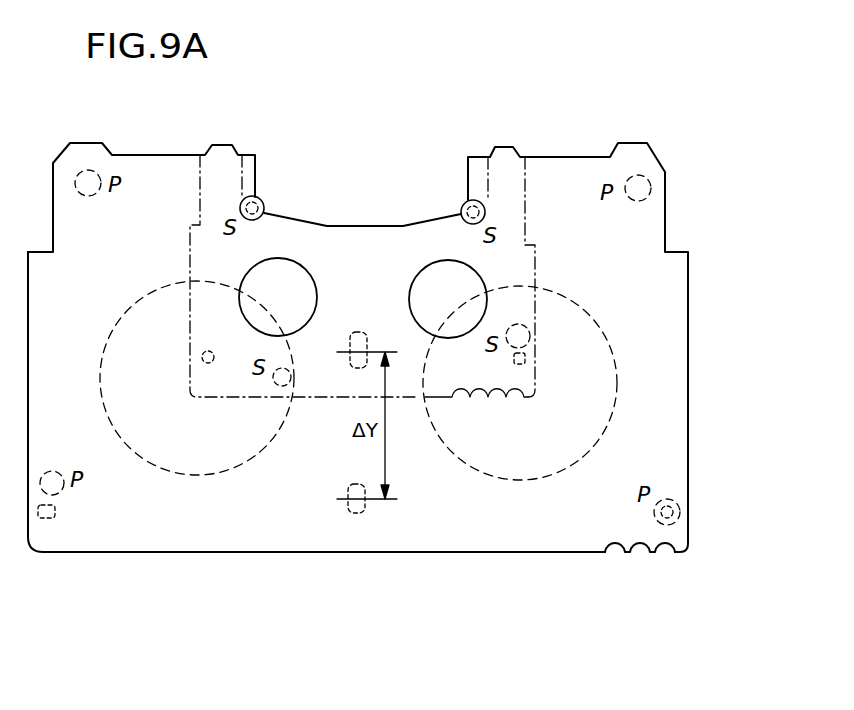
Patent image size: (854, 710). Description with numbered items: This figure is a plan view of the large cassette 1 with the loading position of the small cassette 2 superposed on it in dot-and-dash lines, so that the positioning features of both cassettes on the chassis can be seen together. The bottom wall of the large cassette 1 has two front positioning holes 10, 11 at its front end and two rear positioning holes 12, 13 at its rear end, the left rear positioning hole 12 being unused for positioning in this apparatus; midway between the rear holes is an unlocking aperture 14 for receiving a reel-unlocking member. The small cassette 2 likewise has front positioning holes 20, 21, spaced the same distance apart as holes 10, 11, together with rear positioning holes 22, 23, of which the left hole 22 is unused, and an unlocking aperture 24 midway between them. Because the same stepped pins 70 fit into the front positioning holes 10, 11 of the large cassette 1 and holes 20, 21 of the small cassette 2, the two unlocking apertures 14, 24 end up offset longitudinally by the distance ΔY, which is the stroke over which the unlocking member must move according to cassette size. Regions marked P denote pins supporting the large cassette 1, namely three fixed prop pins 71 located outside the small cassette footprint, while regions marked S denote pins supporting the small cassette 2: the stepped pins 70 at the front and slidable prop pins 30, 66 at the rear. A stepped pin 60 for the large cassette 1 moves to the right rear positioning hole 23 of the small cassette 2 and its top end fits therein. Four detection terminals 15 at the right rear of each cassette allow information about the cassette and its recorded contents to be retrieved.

The large cassette 1 is at (688, 342).
The small cassette 2 is at (528, 183).
The front positioning hole 10 is at (266, 204).
The front positioning hole 20 is at (316, 188).
The front positioning hole 11 is at (460, 203).
The front positioning hole 21 is at (436, 162).
The rear positioning hole 12 is at (57, 512).
The rear positioning hole 13 is at (681, 510).
The unlocking aperture 14 is at (365, 511).
The detection terminal 15 is at (632, 553).
The rear positioning hole 22 is at (203, 360).
The rear positioning hole 23 is at (527, 356).
The unlocking aperture 24 is at (358, 332).
The prop pin 30 is at (278, 386).
The stepped pin 60 is at (676, 503).
The prop pin 66 is at (530, 315).
The stepped pin 70 is at (258, 196).
The prop pin 71 is at (88, 197).